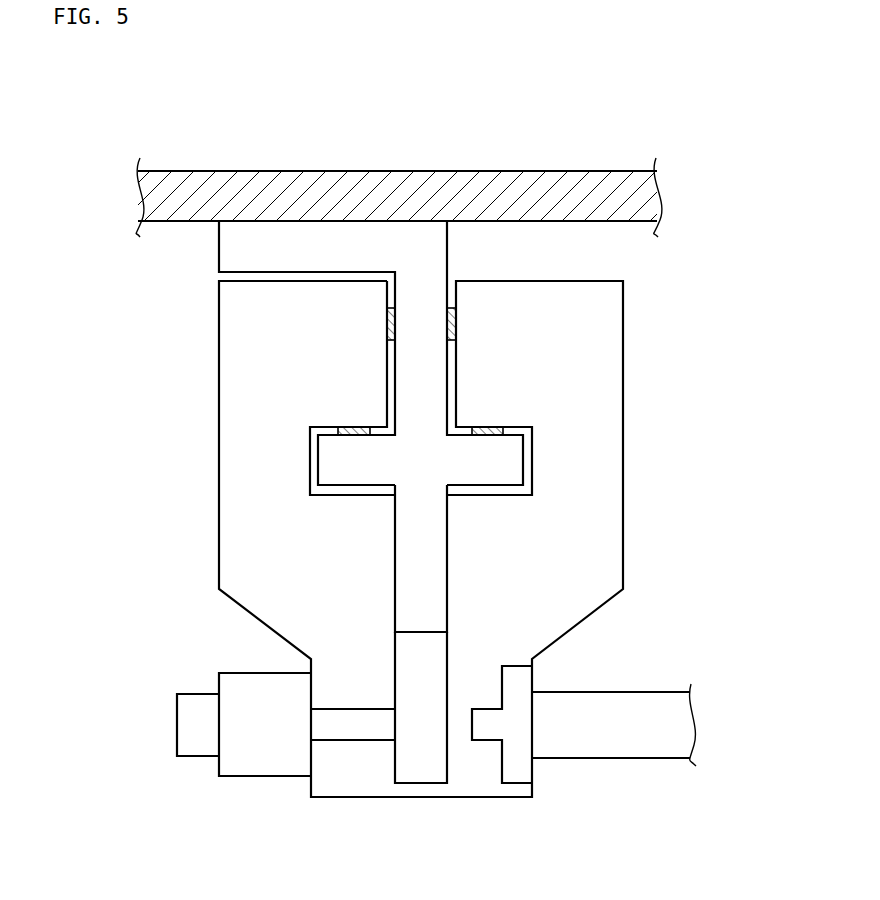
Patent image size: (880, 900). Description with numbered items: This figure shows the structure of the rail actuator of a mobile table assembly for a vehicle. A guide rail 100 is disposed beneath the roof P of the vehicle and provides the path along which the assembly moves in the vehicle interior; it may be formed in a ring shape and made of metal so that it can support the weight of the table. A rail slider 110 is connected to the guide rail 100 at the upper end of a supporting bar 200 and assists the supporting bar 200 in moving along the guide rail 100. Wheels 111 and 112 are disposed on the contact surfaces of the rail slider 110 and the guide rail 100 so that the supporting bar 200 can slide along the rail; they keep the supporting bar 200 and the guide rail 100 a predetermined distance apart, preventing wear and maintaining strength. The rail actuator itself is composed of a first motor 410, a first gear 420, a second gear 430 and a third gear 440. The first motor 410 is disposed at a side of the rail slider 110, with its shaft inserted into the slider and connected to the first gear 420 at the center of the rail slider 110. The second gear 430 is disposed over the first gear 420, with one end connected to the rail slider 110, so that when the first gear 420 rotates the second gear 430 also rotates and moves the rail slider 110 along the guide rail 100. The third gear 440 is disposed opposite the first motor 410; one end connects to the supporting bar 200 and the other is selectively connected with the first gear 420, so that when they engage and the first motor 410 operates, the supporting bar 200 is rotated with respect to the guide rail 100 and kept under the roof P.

The roof P is at (539, 185).
The guide rail 100 is at (228, 250).
The rail slider 110 is at (598, 475).
The wheel 111 is at (387, 323).
The wheel 112 is at (345, 427).
The supporting bar 200 is at (643, 745).
The first motor 410 is at (262, 767).
The first gear 420 is at (425, 770).
The second gear 430 is at (431, 565).
The third gear 440 is at (516, 767).